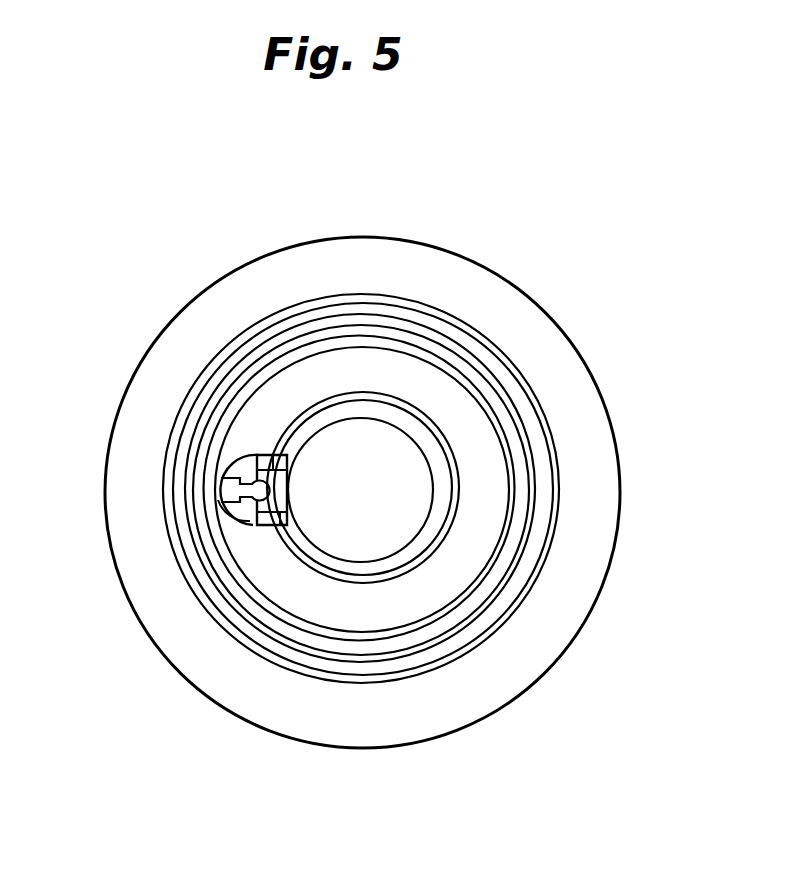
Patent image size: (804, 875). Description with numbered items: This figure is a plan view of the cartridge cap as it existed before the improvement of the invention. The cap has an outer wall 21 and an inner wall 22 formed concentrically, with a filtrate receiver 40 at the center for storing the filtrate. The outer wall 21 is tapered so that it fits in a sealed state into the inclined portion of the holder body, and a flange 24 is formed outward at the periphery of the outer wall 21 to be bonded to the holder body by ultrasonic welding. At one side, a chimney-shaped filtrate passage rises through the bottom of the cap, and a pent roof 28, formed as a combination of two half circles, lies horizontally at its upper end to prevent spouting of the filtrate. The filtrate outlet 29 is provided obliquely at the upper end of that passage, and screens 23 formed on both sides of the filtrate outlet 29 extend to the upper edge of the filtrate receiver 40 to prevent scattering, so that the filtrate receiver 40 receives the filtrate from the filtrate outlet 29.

The outer wall 21 is at (163, 465).
The inner wall 22 is at (237, 383).
The screens 23 is at (273, 455).
The flange 24 is at (135, 408).
The pent roof 28 is at (245, 497).
The filtrate outlet 29 is at (262, 512).
The filtrate receiver 40 is at (437, 458).